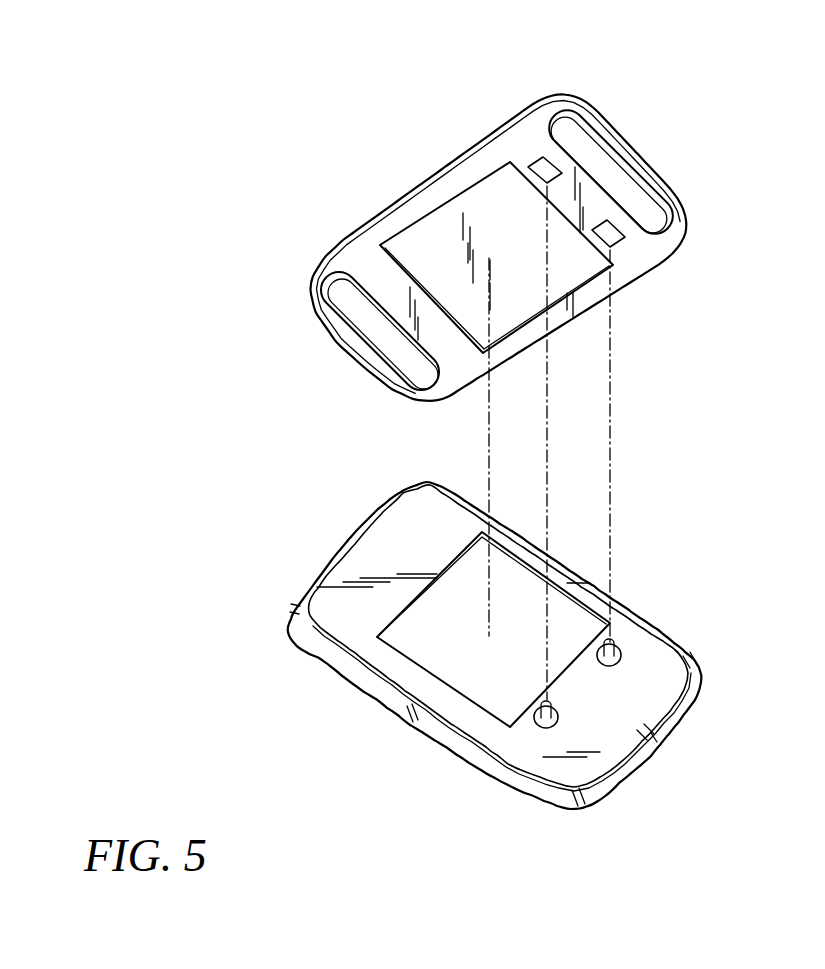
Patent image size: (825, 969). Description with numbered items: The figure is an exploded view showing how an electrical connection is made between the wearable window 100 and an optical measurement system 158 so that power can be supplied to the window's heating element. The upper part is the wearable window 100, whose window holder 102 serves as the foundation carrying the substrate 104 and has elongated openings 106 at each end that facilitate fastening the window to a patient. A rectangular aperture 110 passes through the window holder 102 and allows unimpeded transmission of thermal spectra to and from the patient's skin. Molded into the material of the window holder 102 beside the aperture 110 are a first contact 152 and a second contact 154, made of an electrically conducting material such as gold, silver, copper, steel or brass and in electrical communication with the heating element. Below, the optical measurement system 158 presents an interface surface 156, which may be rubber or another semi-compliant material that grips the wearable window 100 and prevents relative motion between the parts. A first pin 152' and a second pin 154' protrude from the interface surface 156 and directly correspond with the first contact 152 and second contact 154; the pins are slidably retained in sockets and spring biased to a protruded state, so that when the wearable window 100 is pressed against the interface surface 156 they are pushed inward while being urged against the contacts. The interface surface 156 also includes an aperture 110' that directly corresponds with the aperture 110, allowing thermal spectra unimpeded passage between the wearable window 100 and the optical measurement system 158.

The wearable window 100 is at (272, 101).
The window holder 102 is at (350, 252).
The substrate 104 is at (423, 235).
The openings 106 is at (617, 175).
The aperture 110 is at (493, 232).
The first contact 152 is at (660, 255).
The second contact 154 is at (507, 137).
The first pin 152' is at (669, 639).
The second pin 154' is at (510, 763).
The interface surface 156 is at (657, 665).
The optical measurement system 158 is at (671, 717).
The aperture 110' is at (456, 631).